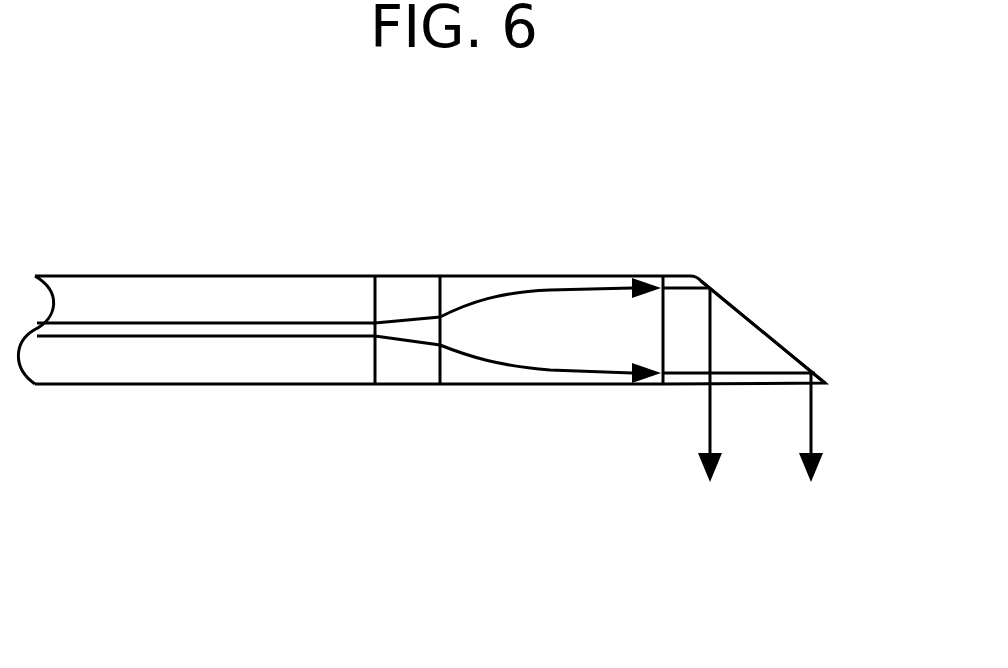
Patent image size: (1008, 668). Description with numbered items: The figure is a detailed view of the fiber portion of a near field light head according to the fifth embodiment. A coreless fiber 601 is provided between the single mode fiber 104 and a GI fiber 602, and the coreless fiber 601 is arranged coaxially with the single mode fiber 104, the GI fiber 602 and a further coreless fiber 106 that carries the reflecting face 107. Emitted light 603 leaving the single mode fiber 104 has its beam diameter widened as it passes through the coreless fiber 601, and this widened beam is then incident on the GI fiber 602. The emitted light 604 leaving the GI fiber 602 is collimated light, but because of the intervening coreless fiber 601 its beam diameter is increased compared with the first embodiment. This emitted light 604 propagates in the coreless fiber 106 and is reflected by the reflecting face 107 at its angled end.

The single mode fiber 104 is at (226, 293).
The coreless fiber 106 is at (743, 348).
The reflecting face 107 is at (758, 327).
The coreless fiber 601 is at (416, 302).
The GI fiber 602 is at (604, 333).
The emitted light 603 is at (422, 343).
The emitted light 604 is at (696, 374).